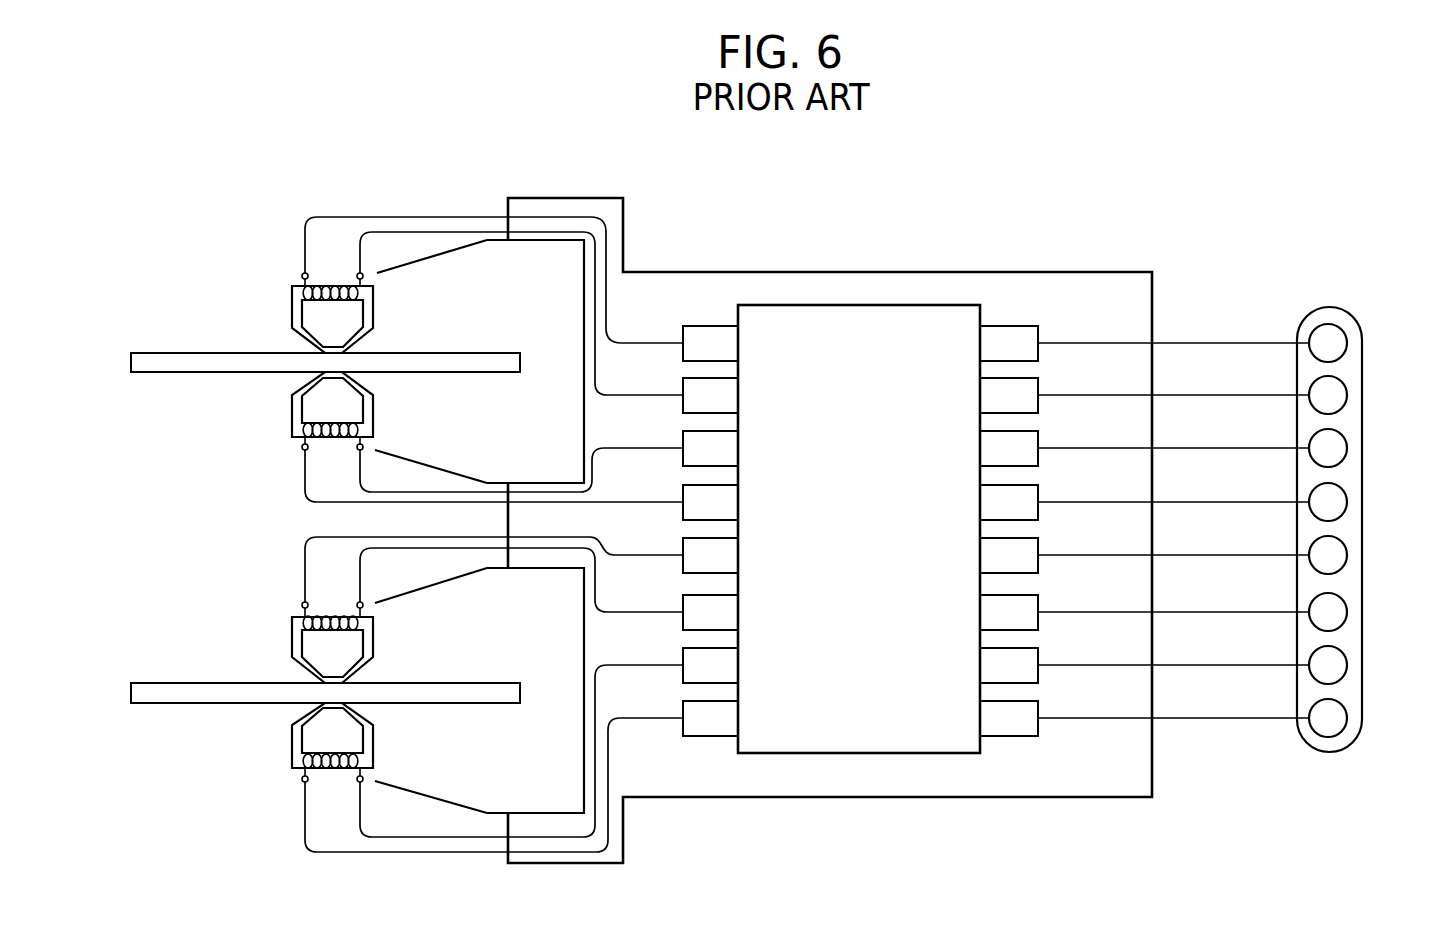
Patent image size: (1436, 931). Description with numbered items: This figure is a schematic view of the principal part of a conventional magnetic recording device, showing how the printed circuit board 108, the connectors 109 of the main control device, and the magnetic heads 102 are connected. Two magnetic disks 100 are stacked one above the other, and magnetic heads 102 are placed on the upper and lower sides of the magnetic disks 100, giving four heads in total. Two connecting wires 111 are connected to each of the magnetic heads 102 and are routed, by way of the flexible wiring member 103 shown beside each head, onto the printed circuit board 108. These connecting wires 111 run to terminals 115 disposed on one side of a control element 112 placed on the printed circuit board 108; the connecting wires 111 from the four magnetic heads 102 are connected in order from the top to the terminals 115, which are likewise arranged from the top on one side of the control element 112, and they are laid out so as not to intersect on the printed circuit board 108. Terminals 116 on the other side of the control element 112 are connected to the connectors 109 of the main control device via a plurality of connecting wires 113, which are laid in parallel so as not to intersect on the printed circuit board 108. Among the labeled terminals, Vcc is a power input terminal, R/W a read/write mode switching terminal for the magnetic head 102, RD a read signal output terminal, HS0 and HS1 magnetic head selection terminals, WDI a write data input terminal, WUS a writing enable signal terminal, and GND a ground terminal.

The magnetic disk 100 is at (166, 352).
The magnetic head 102 is at (292, 305).
The flexible printed circuit 103 is at (440, 254).
The printed circuit board 108 is at (988, 292).
The connector 109 is at (1363, 551).
The connecting wire 111 is at (385, 217).
The control element 112 is at (855, 305).
The connecting wire 113 is at (1213, 342).
The terminal 115 is at (700, 326).
The terminal 116 is at (1040, 330).